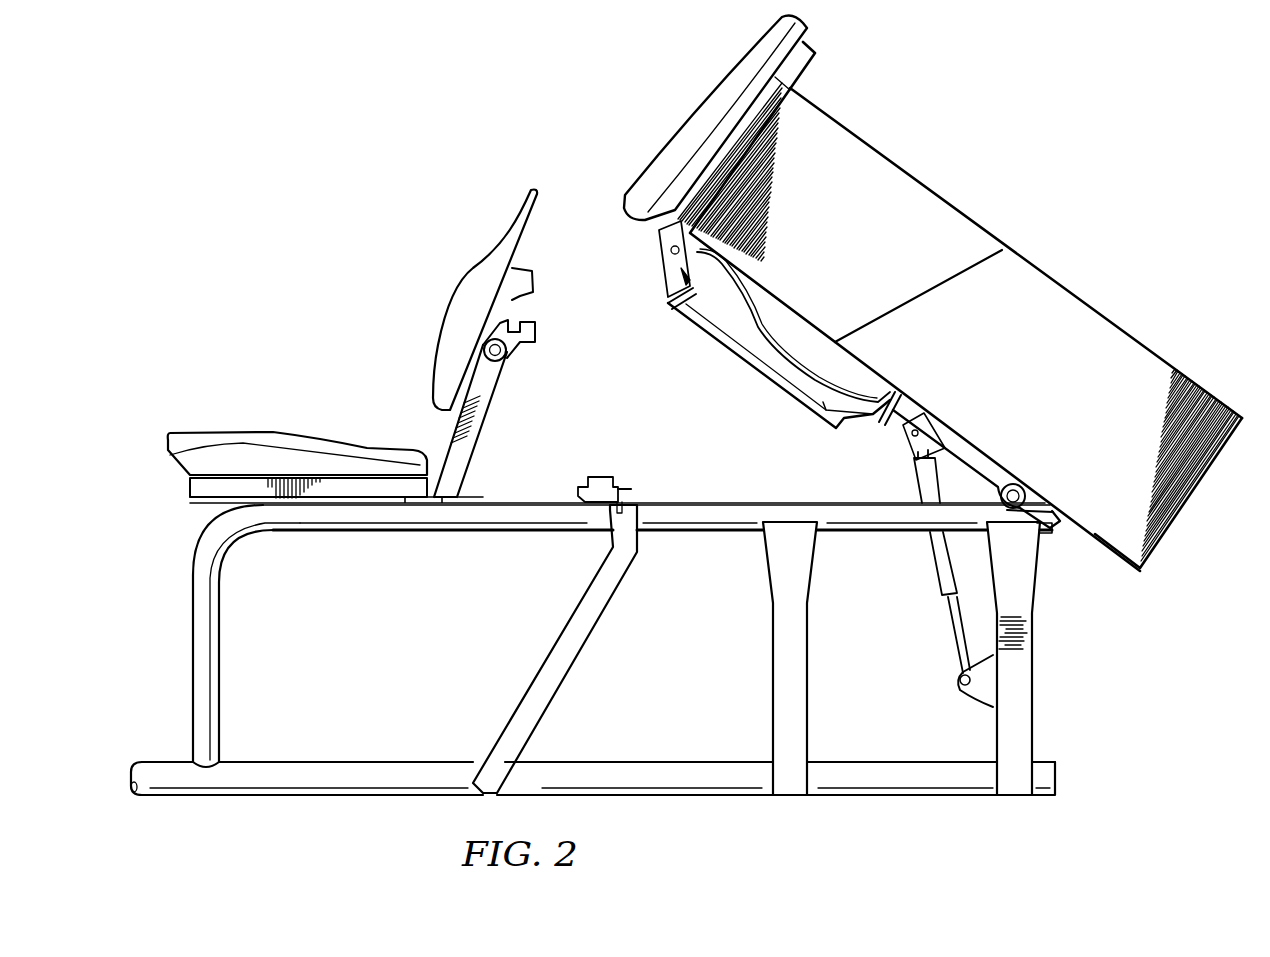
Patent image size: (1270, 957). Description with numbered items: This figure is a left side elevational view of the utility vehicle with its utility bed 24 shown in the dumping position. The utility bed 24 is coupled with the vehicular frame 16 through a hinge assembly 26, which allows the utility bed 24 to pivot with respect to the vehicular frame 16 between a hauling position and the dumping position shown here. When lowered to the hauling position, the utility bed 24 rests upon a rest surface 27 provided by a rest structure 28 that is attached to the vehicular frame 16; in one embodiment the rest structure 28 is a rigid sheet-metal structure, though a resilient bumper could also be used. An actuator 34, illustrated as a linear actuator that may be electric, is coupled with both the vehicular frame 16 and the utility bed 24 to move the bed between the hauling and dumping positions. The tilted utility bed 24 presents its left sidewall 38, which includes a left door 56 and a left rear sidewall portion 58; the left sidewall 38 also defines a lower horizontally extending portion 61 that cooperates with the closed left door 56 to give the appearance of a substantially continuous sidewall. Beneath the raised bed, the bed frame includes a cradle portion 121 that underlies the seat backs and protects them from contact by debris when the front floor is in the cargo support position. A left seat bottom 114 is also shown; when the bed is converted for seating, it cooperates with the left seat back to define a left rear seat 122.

The vehicular frame 16 is at (790, 808).
The utility bed 24 is at (933, 333).
The hinge assembly 26 is at (1047, 534).
The rest surface 27 is at (575, 459).
The rest structure 28 is at (555, 594).
The actuator 34 is at (919, 563).
The left sidewall 38 is at (960, 306).
The left door 56 is at (878, 183).
The left rear sidewall portion 58 is at (1070, 328).
The lower horizontally extending portion 61 is at (783, 298).
The left seat bottom 114 is at (707, 102).
The cradle portion 121 is at (796, 340).
The left rear seat 122 is at (857, 375).